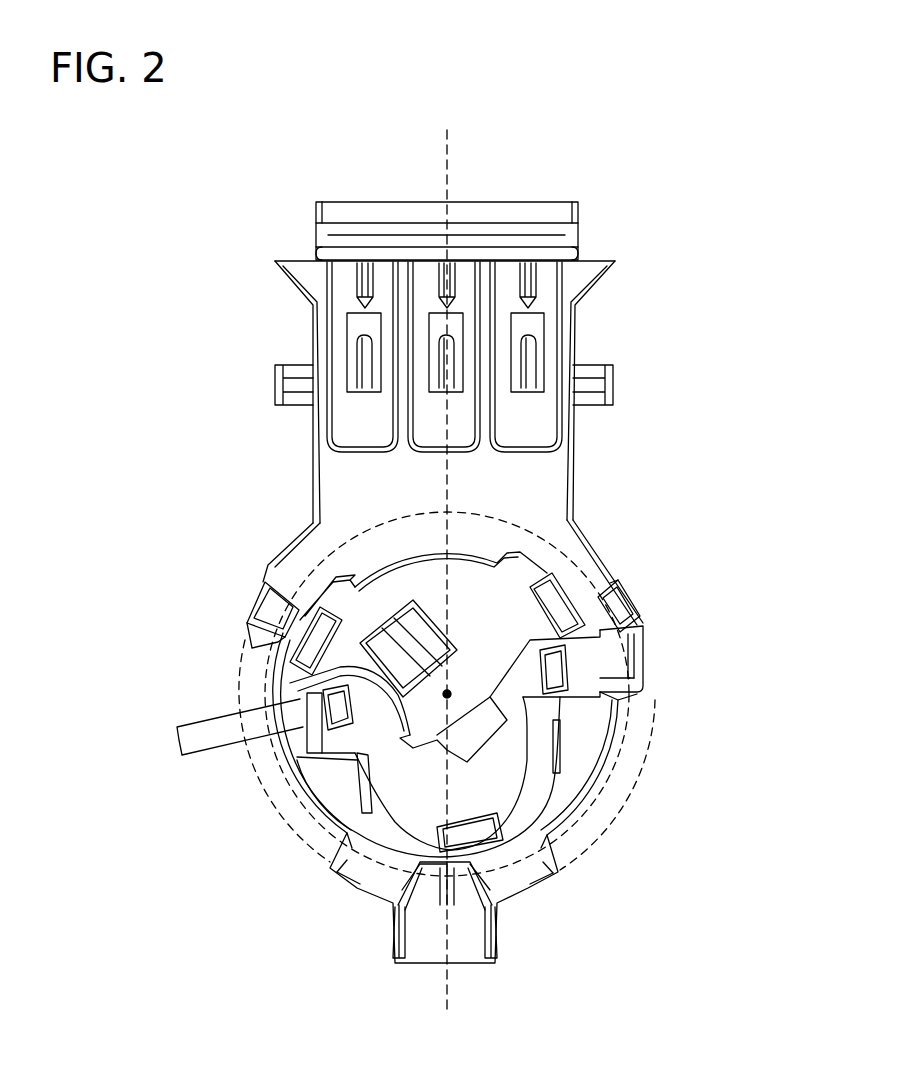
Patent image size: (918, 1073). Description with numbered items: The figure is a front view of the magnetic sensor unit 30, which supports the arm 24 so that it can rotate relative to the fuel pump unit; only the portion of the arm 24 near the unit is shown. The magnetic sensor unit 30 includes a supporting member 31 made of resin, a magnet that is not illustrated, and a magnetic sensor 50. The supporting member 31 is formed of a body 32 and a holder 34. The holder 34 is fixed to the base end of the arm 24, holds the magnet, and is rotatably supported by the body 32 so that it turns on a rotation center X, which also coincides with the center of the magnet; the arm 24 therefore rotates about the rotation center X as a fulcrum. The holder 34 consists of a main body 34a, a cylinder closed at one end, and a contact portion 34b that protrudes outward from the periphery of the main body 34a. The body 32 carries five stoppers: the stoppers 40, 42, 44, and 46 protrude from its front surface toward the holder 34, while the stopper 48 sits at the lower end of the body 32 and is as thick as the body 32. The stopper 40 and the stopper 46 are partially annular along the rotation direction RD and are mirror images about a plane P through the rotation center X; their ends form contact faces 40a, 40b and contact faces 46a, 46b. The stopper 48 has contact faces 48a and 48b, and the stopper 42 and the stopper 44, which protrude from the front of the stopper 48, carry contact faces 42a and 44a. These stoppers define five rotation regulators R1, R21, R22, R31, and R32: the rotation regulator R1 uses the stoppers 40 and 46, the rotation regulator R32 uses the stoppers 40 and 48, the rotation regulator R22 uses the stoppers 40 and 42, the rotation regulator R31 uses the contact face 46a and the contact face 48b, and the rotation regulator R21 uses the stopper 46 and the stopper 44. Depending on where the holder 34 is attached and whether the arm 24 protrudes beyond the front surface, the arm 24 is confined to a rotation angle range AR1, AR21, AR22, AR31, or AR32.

The magnetic sensor unit 30 is at (508, 186).
The plane P is at (447, 158).
The magnetic sensor 50 is at (365, 345).
The supporting member 31 is at (576, 438).
The body 32 is at (556, 477).
The holder 34 is at (562, 535).
The main body 34a is at (603, 552).
The contact portion 34b is at (633, 690).
The stopper 40 is at (626, 612).
The contact face 40a is at (642, 652).
The contact face 40b is at (607, 583).
The stopper 46 is at (262, 607).
The contact face 46a is at (252, 646).
The contact face 46b is at (290, 585).
The stopper 42 is at (485, 903).
The contact face 42a is at (500, 880).
The stopper 44 is at (397, 903).
The contact face 44a is at (386, 880).
The stopper 48 is at (557, 850).
The contact face 48a is at (560, 872).
The contact face 48b is at (331, 862).
The arm 24 is at (223, 752).
The rotation regulator R1 is at (390, 513).
The rotation regulator R21 is at (263, 673).
The rotation regulator R22 is at (625, 742).
The rotation regulator R31 is at (237, 702).
The rotation regulator R32 is at (625, 805).
The rotation angle range AR1 is at (481, 513).
The rotation angle range AR21 is at (300, 830).
The rotation angle range AR22 is at (610, 778).
The rotation angle range AR31 is at (277, 808).
The rotation angle range AR32 is at (607, 830).
The rotation center X is at (445, 692).
The rotation direction RD is at (110, 745).